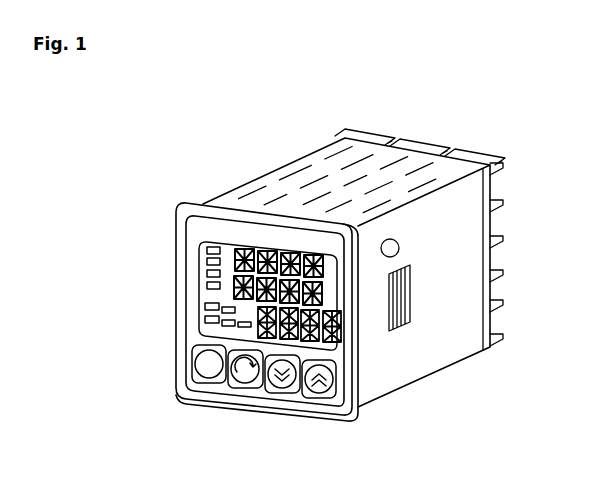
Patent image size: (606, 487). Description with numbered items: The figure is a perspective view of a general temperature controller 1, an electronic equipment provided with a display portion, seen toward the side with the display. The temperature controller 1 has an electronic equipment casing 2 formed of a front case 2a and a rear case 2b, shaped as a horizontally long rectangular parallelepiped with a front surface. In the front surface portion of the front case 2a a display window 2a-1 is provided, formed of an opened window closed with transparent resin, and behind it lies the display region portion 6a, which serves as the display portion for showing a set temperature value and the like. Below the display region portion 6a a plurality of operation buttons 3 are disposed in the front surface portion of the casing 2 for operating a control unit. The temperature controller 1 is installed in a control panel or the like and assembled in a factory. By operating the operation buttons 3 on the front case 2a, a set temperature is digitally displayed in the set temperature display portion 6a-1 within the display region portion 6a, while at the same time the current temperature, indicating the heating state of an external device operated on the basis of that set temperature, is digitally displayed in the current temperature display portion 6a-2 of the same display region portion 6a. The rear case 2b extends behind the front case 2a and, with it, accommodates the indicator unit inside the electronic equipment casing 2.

The temperature controller 1 is at (531, 129).
The electronic equipment casing 2 is at (443, 366).
The front case 2a is at (192, 229).
The display window 2a-1 is at (203, 332).
The rear case 2b is at (470, 356).
The operation buttons 3 is at (218, 384).
The display region portion 6a is at (197, 290).
The set temperature display portion 6a-1 is at (316, 342).
The current temperature display portion 6a-2 is at (229, 252).